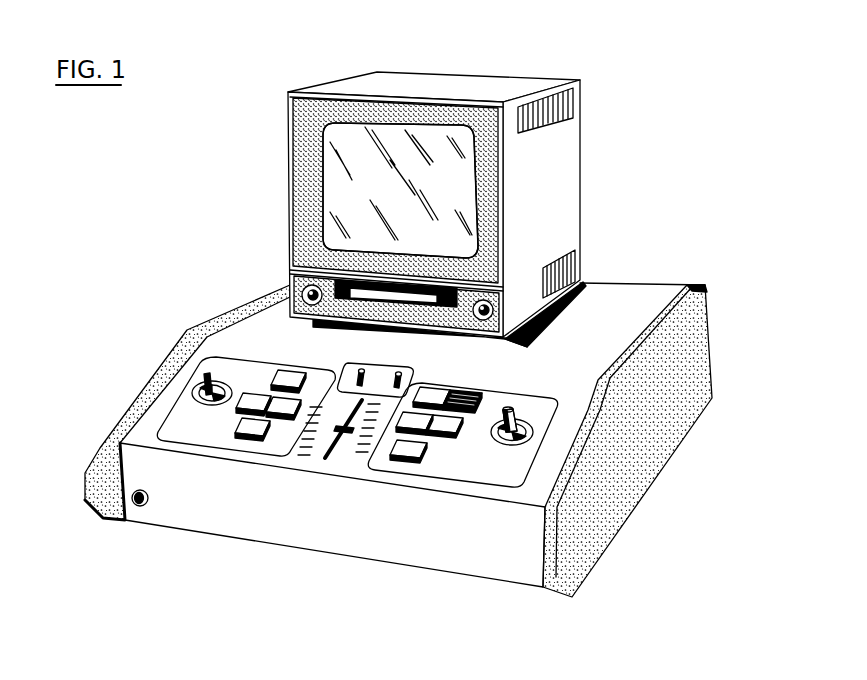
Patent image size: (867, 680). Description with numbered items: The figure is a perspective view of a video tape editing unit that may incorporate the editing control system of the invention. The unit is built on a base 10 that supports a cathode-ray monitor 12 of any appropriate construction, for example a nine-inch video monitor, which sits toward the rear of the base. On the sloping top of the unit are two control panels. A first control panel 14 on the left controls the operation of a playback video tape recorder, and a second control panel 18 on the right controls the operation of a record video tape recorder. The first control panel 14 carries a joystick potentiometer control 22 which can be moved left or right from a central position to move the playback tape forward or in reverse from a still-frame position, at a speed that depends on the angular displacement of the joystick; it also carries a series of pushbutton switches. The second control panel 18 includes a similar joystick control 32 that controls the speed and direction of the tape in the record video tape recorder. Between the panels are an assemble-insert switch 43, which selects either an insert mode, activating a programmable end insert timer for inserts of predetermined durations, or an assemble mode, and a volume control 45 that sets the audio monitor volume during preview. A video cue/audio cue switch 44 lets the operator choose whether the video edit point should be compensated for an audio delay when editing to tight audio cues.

The base 10 is at (418, 412).
The cathode-ray monitor 12 is at (457, 90).
The first control panel 14 is at (217, 461).
The second control panel 18 is at (526, 501).
The joystick potentiometer control 22 is at (205, 381).
The joystick control 32 is at (518, 414).
The assemble-insert switch 43 is at (357, 367).
The video cue/audio cue switch 44 is at (600, 395).
The volume control 45 is at (353, 432).